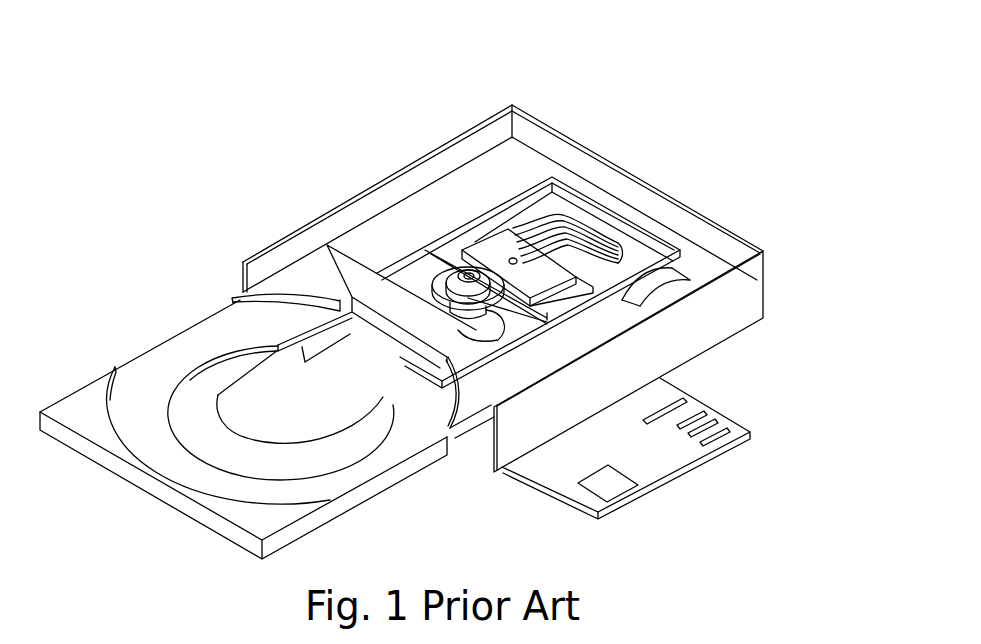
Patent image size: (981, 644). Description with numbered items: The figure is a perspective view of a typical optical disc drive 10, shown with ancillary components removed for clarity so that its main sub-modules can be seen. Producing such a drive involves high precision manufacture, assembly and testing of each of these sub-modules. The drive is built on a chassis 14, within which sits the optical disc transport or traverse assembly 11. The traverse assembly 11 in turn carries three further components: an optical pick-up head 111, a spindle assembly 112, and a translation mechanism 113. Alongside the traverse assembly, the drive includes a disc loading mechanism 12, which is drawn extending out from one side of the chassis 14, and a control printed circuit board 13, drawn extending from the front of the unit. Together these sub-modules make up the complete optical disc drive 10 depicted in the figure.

The optical disc drive 10 is at (790, 105).
The optical disc transport or traverse (TVS) assembly 11 is at (604, 198).
The disc loading mechanism 12 is at (223, 322).
The control printed circuit board (PCB) 13 is at (727, 418).
The chassis 14 is at (423, 162).
The optical pick-up head (OPU) 111 is at (565, 266).
The spindle assembly 112 is at (478, 313).
The translation mechanism 113 is at (648, 265).